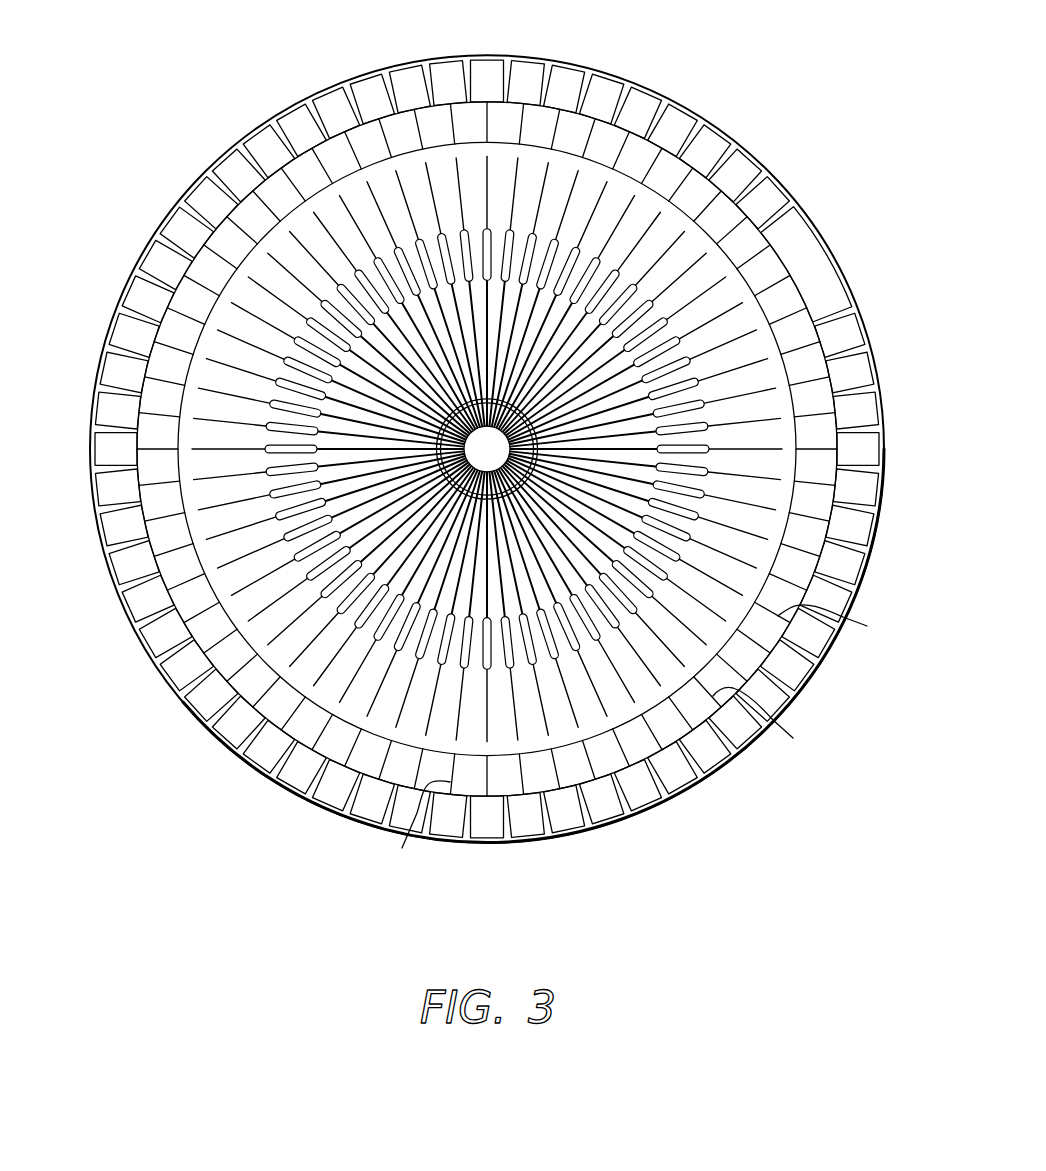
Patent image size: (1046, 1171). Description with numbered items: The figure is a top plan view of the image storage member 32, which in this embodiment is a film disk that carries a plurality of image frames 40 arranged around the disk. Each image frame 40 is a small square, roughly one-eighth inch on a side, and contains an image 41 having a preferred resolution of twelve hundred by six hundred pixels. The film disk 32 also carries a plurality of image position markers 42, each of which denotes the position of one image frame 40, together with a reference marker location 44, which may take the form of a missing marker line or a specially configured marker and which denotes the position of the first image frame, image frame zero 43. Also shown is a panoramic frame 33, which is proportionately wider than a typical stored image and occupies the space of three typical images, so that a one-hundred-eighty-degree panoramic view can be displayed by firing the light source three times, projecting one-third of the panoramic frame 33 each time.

The image storage member 32 is at (487, 56).
The panoramic frame 33 is at (664, 113).
The image frame 40 is at (92, 441).
The image 41 is at (103, 450).
The image position marker 42 is at (643, 740).
The image frame zero 43 is at (506, 838).
The reference marker location 44 is at (494, 787).